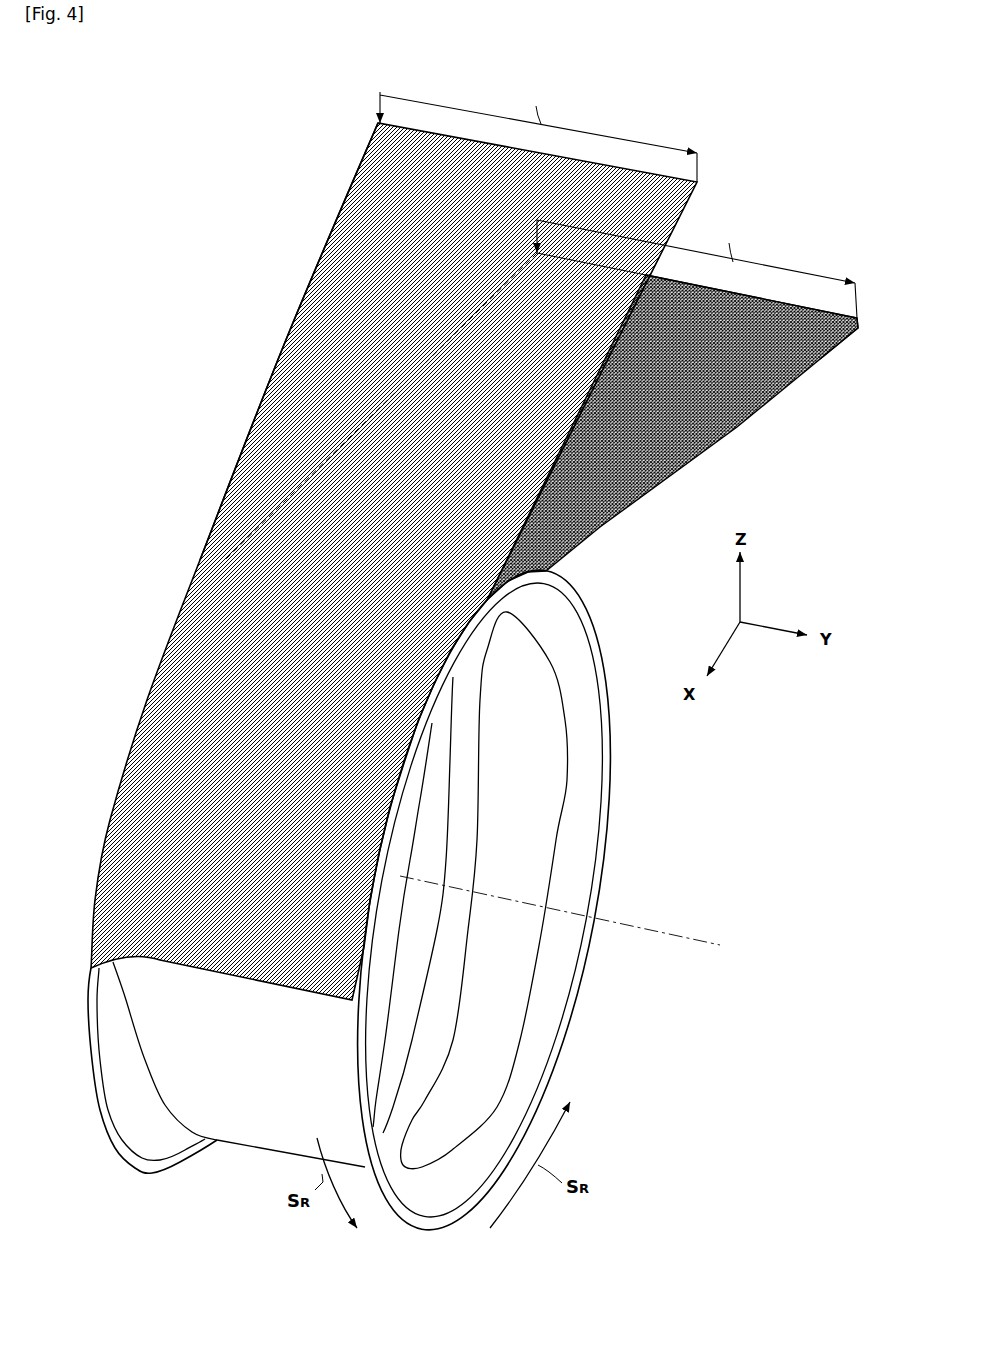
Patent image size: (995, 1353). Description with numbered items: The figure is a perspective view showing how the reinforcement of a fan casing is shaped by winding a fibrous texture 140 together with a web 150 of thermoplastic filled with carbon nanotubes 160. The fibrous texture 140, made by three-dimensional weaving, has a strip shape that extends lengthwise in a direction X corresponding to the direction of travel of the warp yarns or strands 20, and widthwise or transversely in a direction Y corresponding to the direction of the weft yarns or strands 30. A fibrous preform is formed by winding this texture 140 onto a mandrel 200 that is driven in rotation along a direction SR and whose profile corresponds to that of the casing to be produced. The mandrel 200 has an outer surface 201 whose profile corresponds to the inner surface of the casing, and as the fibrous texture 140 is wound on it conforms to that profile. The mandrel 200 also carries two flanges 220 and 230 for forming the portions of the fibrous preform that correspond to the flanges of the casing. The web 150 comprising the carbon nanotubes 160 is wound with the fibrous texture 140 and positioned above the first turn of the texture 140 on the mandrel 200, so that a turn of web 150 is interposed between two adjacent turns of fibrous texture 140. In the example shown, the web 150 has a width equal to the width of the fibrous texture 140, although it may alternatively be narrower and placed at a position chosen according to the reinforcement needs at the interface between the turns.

The warp yarns or strands 20 is at (747, 297).
The weft yarns or strands 30 is at (823, 342).
The fibrous texture 140 is at (790, 386).
The web 150 is at (333, 325).
The carbon nanotubes 160 is at (357, 257).
The mandrel 200 is at (128, 1182).
The outer surface 201 is at (242, 1130).
The flange 220 is at (168, 1167).
The flange 230 is at (431, 1220).